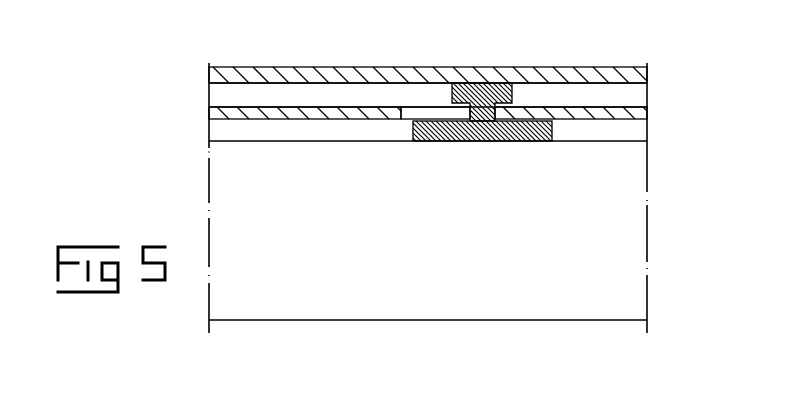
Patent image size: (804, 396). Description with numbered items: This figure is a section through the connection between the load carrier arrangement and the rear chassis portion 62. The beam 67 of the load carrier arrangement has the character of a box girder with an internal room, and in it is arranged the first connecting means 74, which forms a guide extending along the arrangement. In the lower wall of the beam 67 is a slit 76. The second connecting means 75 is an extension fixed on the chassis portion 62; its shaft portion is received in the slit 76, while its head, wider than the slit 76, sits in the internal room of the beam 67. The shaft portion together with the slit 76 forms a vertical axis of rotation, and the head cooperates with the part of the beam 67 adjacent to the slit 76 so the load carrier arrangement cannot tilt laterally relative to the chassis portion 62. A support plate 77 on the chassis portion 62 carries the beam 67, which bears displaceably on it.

The rear chassis portion 62 is at (630, 227).
The beam 67 is at (241, 67).
The first connecting means 74 is at (315, 95).
The second connecting means 75 is at (494, 88).
The slit 76 is at (428, 113).
The support plate 77 is at (523, 143).